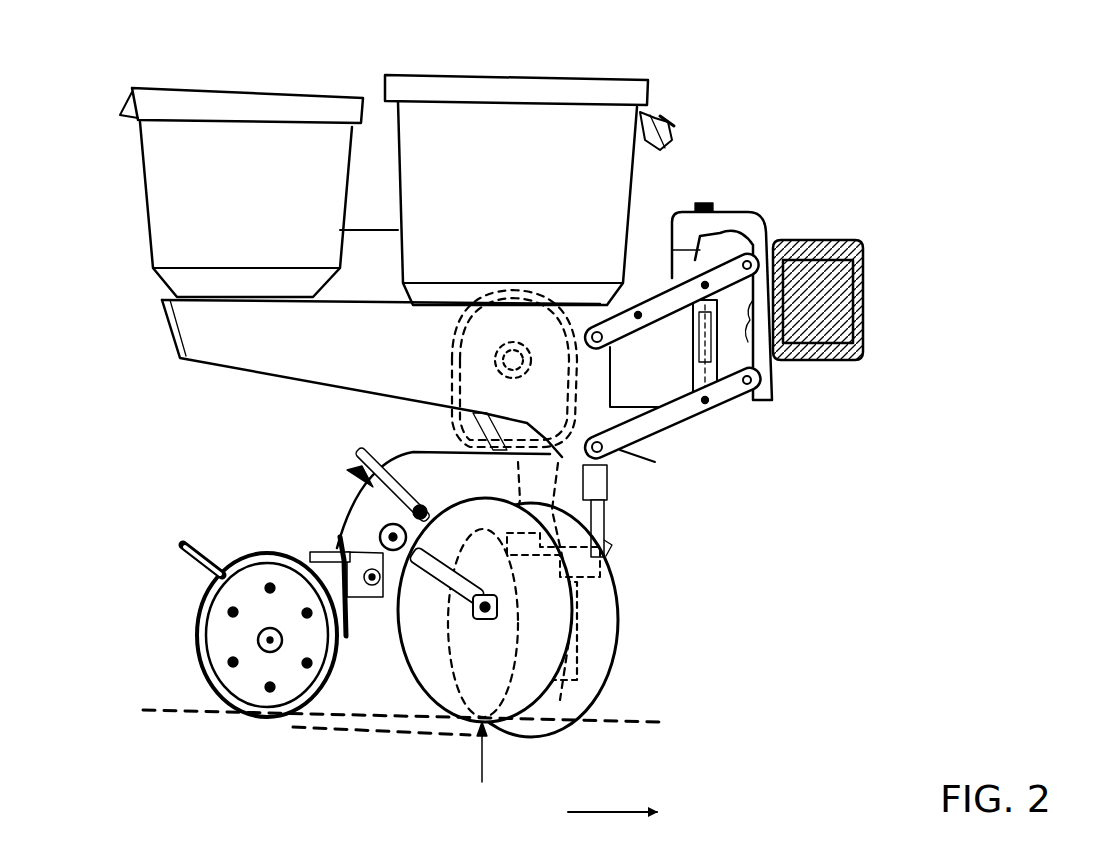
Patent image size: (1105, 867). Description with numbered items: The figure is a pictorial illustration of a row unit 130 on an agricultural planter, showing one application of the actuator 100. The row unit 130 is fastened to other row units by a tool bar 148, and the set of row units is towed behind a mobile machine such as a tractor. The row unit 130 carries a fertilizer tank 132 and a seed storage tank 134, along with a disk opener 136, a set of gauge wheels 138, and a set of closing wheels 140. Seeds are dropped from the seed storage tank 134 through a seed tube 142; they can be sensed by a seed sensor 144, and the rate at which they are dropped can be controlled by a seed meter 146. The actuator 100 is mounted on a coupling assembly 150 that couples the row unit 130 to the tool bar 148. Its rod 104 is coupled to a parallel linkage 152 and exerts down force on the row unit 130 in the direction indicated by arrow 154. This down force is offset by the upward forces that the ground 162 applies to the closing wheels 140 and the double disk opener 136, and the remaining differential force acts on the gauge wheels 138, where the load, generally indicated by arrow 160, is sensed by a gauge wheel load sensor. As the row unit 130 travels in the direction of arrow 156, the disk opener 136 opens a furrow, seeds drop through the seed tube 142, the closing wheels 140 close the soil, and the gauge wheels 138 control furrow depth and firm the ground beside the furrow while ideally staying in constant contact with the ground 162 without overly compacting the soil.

The actuator 100 is at (738, 210).
The rod 104 is at (713, 353).
The row unit 130 is at (848, 73).
The fertilizer tank 132 is at (218, 88).
The seed storage tank 134 is at (517, 80).
The disk opener 136 is at (603, 693).
The gauge wheels 138 is at (413, 670).
The closing wheels 140 is at (225, 703).
The seed tube 142 is at (530, 637).
The seed sensor 144 is at (540, 547).
The seed meter 146 is at (563, 400).
The tool bar 148 is at (862, 293).
The coupling assembly 150 is at (777, 233).
The parallel linkage 152 is at (713, 410).
The arrow 154 is at (717, 340).
The arrow 156 is at (610, 810).
The arrow 160 is at (490, 770).
The ground 162 is at (152, 712).